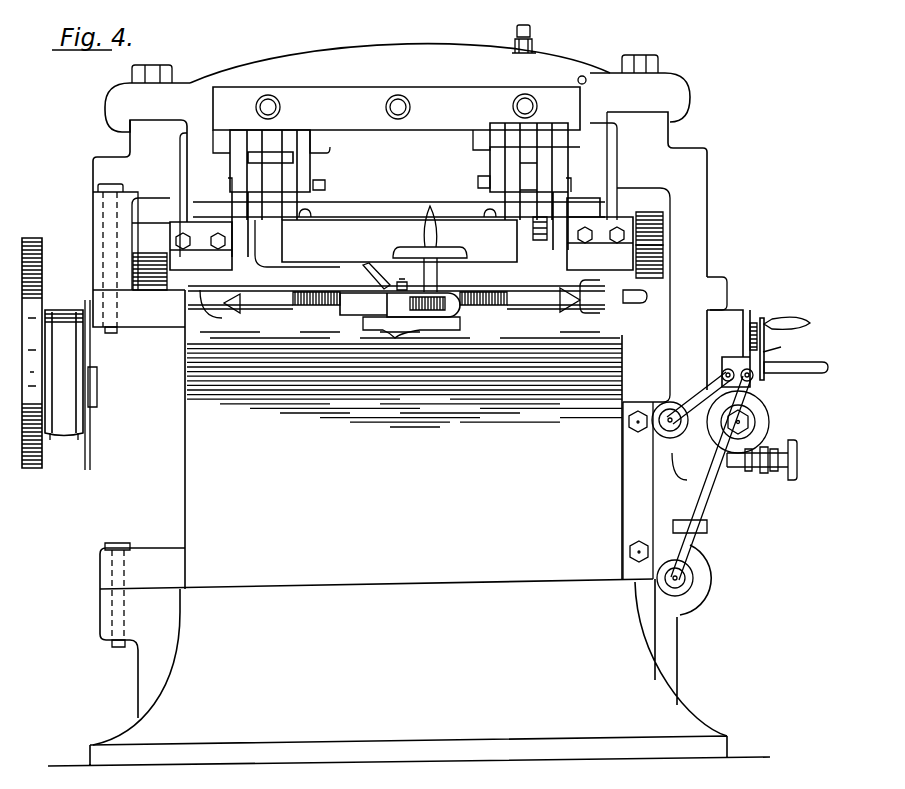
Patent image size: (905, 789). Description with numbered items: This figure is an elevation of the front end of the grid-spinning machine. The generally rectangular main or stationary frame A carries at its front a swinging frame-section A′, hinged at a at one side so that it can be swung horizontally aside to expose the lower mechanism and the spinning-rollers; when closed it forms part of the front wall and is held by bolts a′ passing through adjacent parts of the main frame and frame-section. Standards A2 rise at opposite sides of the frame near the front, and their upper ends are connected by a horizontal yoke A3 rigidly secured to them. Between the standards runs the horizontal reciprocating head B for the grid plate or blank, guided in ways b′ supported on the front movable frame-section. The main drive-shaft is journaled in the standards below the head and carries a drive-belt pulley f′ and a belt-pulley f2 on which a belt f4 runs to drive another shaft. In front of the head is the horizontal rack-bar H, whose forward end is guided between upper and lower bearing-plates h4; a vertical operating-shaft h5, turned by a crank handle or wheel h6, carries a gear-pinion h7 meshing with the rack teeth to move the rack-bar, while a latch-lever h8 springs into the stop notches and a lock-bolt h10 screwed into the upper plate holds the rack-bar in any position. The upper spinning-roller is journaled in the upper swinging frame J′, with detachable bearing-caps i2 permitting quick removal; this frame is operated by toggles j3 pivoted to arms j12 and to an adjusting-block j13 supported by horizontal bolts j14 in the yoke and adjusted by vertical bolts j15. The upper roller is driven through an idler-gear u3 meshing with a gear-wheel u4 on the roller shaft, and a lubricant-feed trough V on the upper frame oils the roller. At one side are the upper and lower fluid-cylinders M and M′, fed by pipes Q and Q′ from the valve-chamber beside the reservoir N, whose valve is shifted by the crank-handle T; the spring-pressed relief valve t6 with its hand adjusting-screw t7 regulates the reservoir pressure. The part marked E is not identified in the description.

The main or stationary frame A is at (409, 672).
The front swinging frame-section A' is at (403, 439).
The standards A2 is at (128, 166).
The horizontal yoke or top frame A3 is at (388, 76).
The hinge a is at (130, 417).
The bolts a' is at (636, 486).
The reciprocating head or frame B is at (283, 313).
The longitudinal ways b' is at (402, 309).
The drive-belt pulley f' is at (41, 353).
The belt-pulley f2 is at (82, 306).
The belt f4 is at (62, 420).
The rack-bar H is at (395, 310).
The bearing-plates h4 is at (462, 318).
The vertical operating-shaft h5 is at (440, 278).
The crank handle or wheel h6 is at (430, 232).
The gear-pinion h7 is at (428, 312).
The latch-lever h8 is at (365, 276).
The lock-bolt h10 is at (415, 275).
The detachable bearing-caps i2 is at (401, 237).
The upper swinging frame J' is at (399, 198).
The upper toggles j3 is at (399, 190).
The arms j12 is at (236, 194).
The adjusting-block j13 is at (442, 122).
The horizontal bolts j14 is at (412, 108).
The vertical bolts j15 is at (535, 53).
The upper fluid-cylinder M is at (677, 441).
The lower fluid-cylinder M' is at (698, 567).
The reservoir N is at (764, 422).
The pipe Q is at (700, 396).
The pipe Q' is at (712, 474).
The crank-handle T is at (772, 306).
The lever rod E is at (812, 388).
The relief or safety valve and regulator t6 is at (755, 470).
The hand adjusting-screw t7 is at (786, 472).
The idler-gear u3 is at (664, 224).
The gear-wheel u4 is at (664, 257).
The lubricant-feed trough V is at (372, 238).